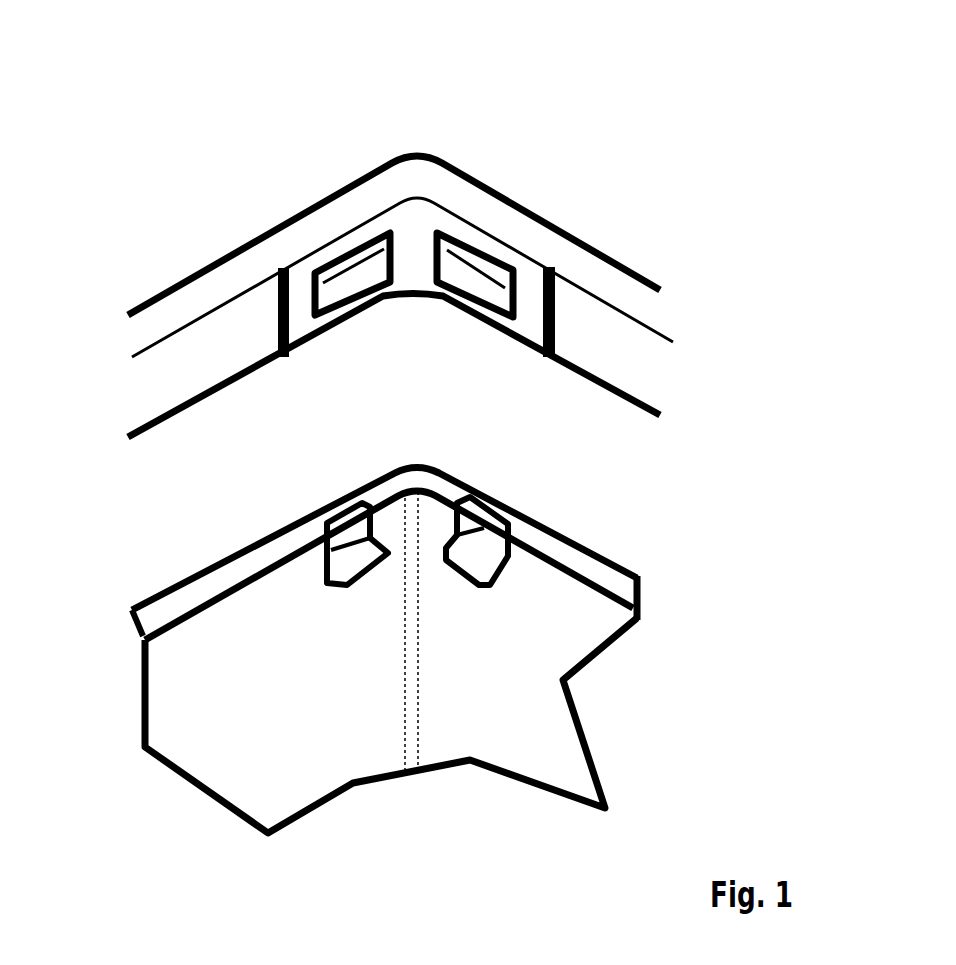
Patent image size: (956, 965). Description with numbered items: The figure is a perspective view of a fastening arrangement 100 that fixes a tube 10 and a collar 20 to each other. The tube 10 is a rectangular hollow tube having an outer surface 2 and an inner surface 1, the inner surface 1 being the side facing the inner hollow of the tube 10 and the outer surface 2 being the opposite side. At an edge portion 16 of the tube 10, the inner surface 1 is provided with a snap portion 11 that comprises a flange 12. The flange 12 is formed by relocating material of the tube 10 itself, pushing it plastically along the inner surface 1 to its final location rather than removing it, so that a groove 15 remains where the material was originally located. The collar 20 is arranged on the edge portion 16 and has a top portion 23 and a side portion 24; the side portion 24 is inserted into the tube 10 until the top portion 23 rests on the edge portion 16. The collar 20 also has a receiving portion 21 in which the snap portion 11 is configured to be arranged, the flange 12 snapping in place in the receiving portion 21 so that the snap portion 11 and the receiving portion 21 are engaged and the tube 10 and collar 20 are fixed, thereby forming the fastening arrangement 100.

The fastening arrangement 100 is at (487, 122).
The collar 20 is at (567, 233).
The receiving portion 21 is at (307, 273).
The top portion 23 is at (345, 207).
The side portion 24 is at (245, 348).
The outer surface 2 is at (160, 584).
The inner surface 1 is at (548, 733).
The tube 10 is at (640, 602).
The snap portion 11 is at (341, 594).
The flange 12 is at (480, 560).
The groove 15 is at (353, 523).
The edge portion 16 is at (627, 587).